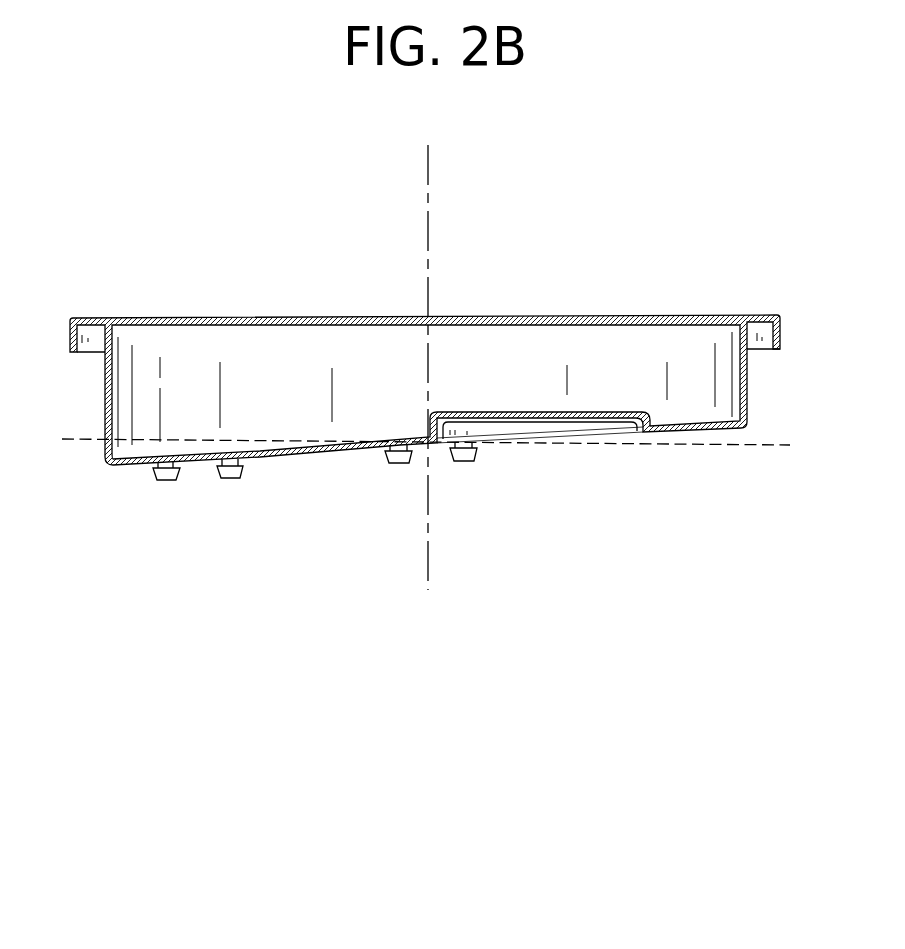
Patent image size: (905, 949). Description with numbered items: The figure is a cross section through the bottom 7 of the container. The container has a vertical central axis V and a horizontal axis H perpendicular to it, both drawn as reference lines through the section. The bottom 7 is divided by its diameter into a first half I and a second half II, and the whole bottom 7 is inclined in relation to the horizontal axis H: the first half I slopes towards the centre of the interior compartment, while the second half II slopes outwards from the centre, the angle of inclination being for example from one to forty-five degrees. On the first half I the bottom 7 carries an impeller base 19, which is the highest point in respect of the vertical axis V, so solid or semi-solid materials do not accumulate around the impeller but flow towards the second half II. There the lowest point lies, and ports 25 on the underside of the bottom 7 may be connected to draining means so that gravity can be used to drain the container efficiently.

The bottom 7 is at (747, 372).
The impeller base 19 is at (583, 423).
The ports 25 is at (166, 481).
The vertical central axis V is at (428, 248).
The horizontal axis H is at (748, 446).
The first half I is at (607, 338).
The second half II is at (228, 332).